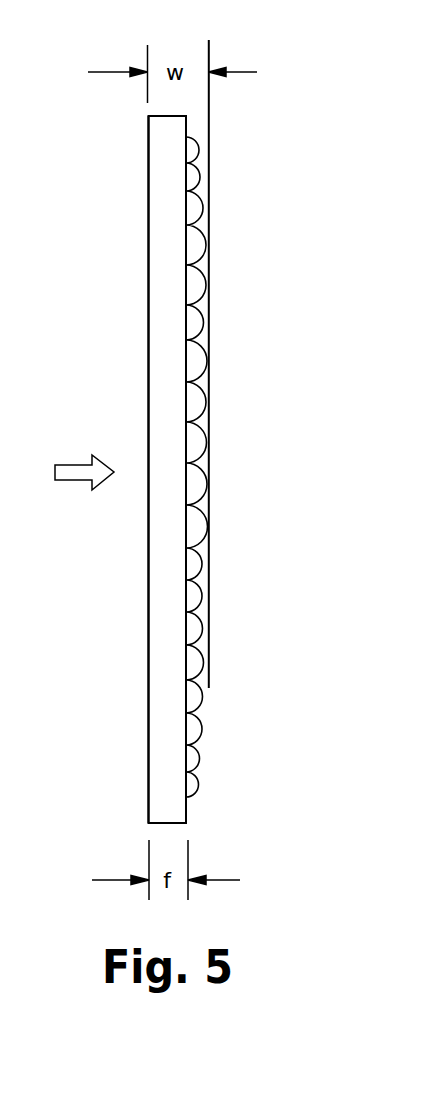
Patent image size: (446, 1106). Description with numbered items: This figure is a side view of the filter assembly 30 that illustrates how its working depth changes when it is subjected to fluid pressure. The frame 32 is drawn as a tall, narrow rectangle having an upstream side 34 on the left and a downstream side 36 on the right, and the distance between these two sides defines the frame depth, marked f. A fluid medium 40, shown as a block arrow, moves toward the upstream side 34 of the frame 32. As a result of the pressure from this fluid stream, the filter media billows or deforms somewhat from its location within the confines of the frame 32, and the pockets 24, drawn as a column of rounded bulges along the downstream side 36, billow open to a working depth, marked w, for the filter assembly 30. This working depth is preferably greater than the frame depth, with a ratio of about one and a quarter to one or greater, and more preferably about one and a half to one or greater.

The pockets 24 is at (205, 518).
The filter assembly 30 is at (155, 487).
The frame 32 is at (169, 137).
The upstream side 34 is at (148, 732).
The downstream side 36 is at (186, 812).
The fluid medium 40 is at (72, 465).